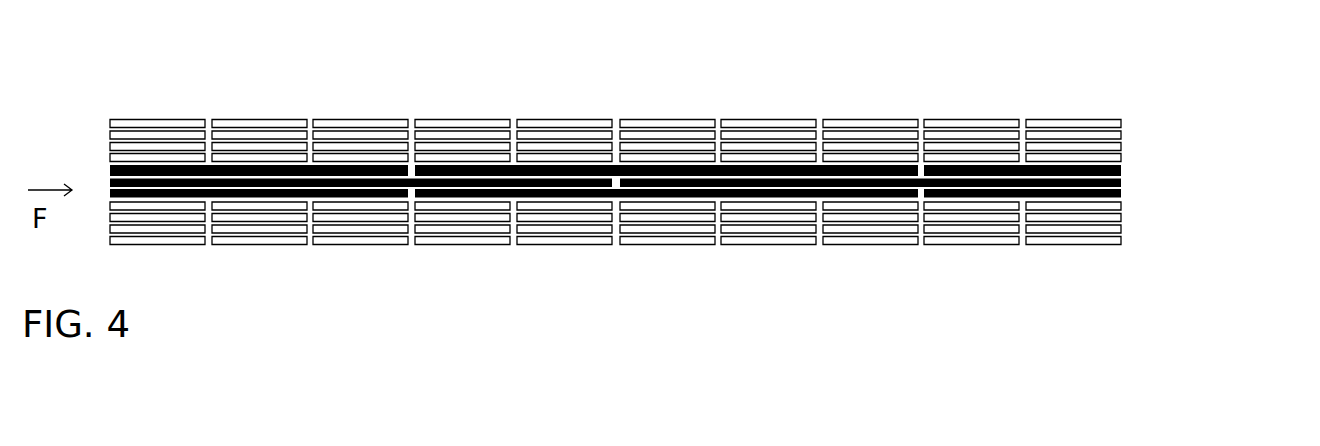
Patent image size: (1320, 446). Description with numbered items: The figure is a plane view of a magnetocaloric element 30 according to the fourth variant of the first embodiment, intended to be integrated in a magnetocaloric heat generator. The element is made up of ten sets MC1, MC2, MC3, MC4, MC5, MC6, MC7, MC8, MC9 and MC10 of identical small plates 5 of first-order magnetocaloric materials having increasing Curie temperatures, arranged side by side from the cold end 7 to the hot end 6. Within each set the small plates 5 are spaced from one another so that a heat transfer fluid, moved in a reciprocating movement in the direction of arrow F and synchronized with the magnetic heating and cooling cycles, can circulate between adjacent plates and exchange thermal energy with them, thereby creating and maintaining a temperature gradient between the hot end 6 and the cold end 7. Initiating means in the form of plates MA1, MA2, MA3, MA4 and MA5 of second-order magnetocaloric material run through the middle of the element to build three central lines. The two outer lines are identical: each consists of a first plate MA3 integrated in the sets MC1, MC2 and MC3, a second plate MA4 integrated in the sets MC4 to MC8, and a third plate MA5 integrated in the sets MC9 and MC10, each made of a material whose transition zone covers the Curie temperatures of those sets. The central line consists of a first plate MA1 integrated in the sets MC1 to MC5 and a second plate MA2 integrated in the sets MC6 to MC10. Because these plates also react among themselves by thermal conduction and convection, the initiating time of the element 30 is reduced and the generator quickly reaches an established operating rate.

The set of small plates MC1 is at (164, 99).
The set of small plates MC2 is at (266, 99).
The set of small plates MC3 is at (367, 99).
The set of small plates MC4 is at (469, 99).
The set of small plates MC5 is at (571, 99).
The set of small plates MC6 is at (674, 99).
The set of small plates MC7 is at (775, 99).
The set of small plates MC8 is at (877, 99).
The set of small plates MC9 is at (978, 99).
The set of small plates MC10 is at (1084, 99).
The plate of second-order magnetocaloric material MA1 is at (470, 187).
The plate of second-order magnetocaloric material MA2 is at (833, 187).
The plate of second-order magnetocaloric material MA3 is at (110, 185).
The plate of second-order magnetocaloric material MA4 is at (732, 197).
The plate of second-order magnetocaloric material MA5 is at (1123, 192).
The small plate 5 is at (296, 215).
The hot end 6 is at (1145, 236).
The cold end 7 is at (101, 230).
The magnetocaloric element 30 is at (1207, 100).